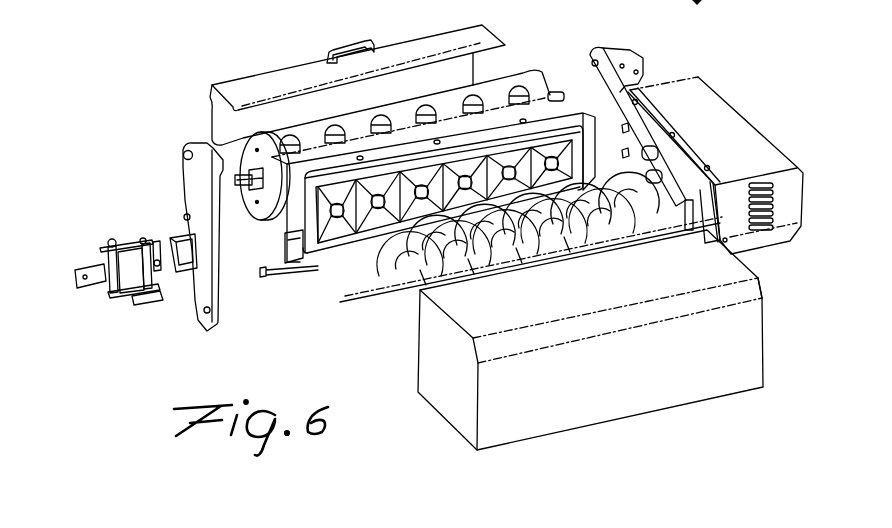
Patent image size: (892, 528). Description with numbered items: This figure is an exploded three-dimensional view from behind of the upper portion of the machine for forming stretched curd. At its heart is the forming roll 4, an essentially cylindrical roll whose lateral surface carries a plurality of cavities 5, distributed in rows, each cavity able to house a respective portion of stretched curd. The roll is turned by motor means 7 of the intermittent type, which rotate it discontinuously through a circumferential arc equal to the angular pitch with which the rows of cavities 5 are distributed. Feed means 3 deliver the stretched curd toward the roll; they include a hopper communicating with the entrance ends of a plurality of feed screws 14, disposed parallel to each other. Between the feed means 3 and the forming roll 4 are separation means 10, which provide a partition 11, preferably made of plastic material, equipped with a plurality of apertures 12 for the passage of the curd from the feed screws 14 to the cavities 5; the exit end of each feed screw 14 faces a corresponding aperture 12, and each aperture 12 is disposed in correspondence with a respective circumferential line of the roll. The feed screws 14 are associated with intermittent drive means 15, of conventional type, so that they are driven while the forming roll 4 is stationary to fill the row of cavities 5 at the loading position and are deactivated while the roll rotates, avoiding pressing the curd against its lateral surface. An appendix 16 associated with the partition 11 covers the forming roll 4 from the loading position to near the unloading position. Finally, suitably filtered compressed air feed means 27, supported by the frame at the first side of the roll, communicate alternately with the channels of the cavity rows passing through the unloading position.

The feed means 3 is at (341, 322).
The forming roll 4 is at (535, 75).
The cavities 5 is at (428, 104).
The motor means 7 is at (730, 100).
The separation means 10 is at (278, 248).
The partition 11 is at (284, 226).
The apertures 12 is at (325, 208).
The feed screws 14 is at (410, 275).
The intermittent drive means 15 is at (656, 386).
The appendix 16 is at (294, 80).
The compressed air feed means 27 is at (113, 296).